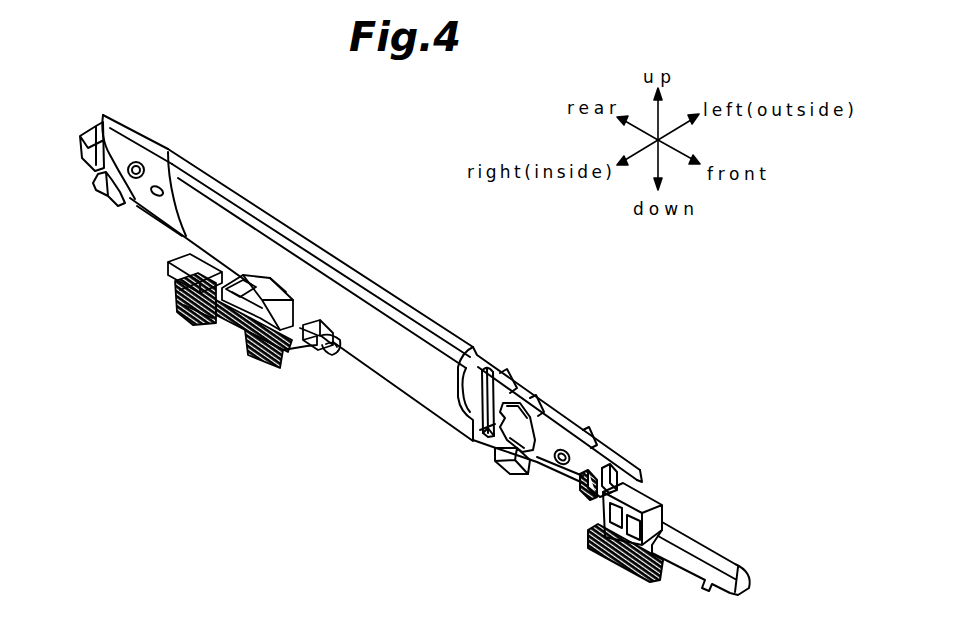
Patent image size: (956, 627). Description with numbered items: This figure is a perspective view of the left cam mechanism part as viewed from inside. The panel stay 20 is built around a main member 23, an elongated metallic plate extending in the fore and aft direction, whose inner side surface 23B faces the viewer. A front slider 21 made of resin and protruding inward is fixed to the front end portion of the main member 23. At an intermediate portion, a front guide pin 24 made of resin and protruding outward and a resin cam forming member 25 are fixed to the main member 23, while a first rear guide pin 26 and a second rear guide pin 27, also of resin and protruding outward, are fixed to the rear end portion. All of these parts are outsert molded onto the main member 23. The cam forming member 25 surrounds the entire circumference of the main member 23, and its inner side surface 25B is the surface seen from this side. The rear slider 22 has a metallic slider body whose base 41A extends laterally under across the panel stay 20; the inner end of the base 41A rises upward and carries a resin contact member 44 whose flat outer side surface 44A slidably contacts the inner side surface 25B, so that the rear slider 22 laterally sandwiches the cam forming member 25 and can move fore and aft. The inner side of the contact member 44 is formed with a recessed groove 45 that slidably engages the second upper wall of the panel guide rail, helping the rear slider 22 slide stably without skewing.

The panel stay 20 is at (429, 283).
The front slider 21 is at (644, 497).
The rear slider 22 is at (222, 343).
The main member 23 is at (542, 437).
The inner side surface 23B is at (487, 370).
The front guide pin 24 is at (494, 466).
The cam forming member 25 is at (322, 252).
The inner side surface 25B is at (401, 367).
The first rear guide pin 26 is at (110, 194).
The second rear guide pin 27 is at (82, 158).
The base 41A is at (337, 342).
The contact member 44 is at (325, 292).
The outer side surface 44A is at (287, 295).
The recessed groove 45 is at (300, 350).